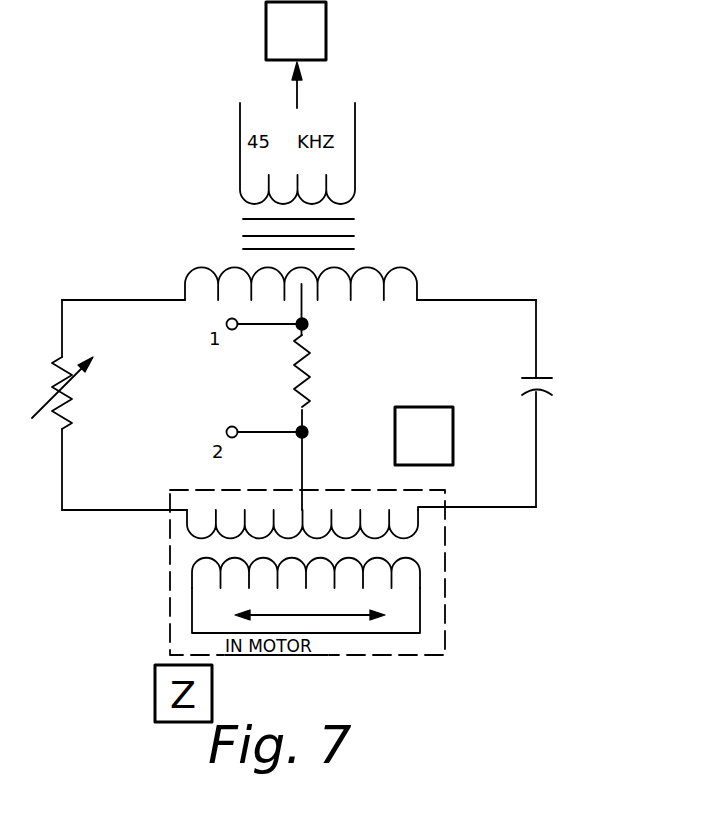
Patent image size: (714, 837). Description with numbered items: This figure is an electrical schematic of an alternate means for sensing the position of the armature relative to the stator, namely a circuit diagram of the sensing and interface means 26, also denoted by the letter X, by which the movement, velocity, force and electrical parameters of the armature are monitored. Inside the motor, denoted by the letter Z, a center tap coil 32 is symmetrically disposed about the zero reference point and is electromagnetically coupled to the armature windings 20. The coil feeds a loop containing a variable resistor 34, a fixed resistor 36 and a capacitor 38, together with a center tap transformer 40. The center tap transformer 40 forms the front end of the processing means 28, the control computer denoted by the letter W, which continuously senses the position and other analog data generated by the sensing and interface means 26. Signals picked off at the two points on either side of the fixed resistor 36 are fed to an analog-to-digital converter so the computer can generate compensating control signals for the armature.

The processing means 28 is at (330, 50).
The center tap transformer 40 is at (352, 267).
The variable resistor 34 is at (95, 375).
The fixed resistor 36 is at (312, 375).
The capacitor 38 is at (548, 372).
The sensing and interface means 26 is at (484, 448).
The center tap coil 32 is at (218, 538).
The armature windings 20 is at (413, 558).